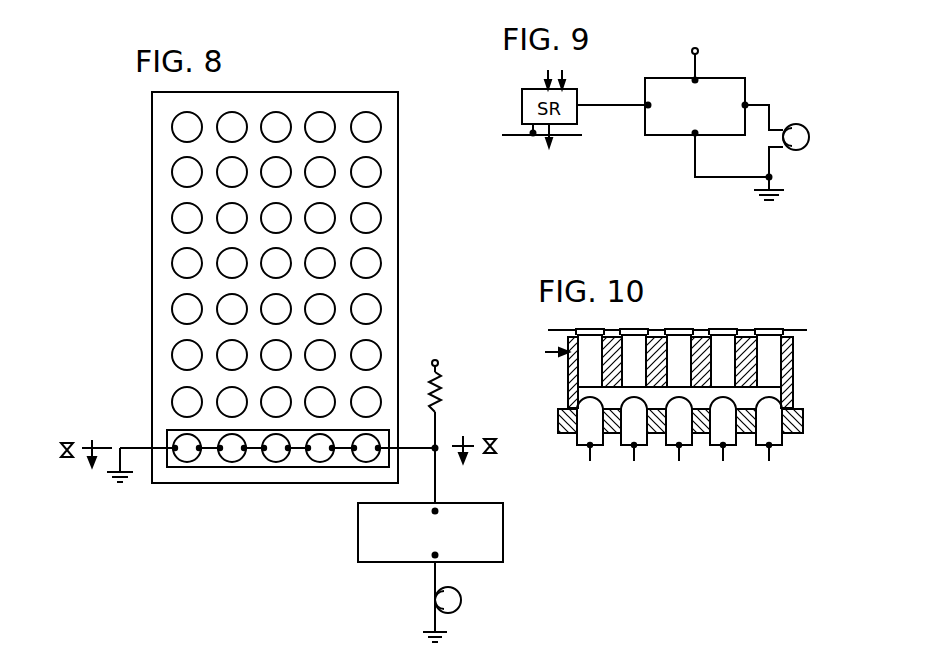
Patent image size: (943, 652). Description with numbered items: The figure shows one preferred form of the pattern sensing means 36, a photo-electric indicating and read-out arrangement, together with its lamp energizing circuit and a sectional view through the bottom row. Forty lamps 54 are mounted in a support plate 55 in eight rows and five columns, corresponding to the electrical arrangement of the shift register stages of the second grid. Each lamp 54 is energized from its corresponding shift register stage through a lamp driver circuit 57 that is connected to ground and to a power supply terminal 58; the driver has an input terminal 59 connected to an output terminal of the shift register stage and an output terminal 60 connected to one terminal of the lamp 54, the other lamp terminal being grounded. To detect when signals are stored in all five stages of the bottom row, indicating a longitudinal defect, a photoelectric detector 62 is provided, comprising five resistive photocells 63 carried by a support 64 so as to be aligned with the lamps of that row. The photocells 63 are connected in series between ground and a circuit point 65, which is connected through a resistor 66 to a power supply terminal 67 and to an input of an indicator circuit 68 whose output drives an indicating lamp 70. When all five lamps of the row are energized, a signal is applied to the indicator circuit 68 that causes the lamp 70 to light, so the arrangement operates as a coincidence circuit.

In FIG. 8, the pattern sensing means 36 is at (98, 118).
In FIG. 8, the lamp 54 is at (378, 132).
In FIG. 9, the lamp 54 is at (810, 136).
In FIG. 10, the lamp 54 is at (720, 449).
In FIG. 8, the support plate 55 is at (398, 206).
In FIG. 10, the support plate 55 is at (803, 424).
In FIG. 9, the lamp driver circuit 57 is at (748, 86).
In FIG. 9, the power supply terminal 58 is at (699, 52).
In FIG. 9, the input terminal 59 is at (643, 107).
In FIG. 9, the output terminal 60 is at (752, 101).
In FIG. 8, the photoelectric detector 62 is at (318, 468).
In FIG. 10, the photoelectric detector 62 is at (538, 352).
In FIG. 8, the resistive photocell 63 is at (273, 463).
In FIG. 10, the resistive photocell 63 is at (681, 338).
In FIG. 8, the support 64 is at (208, 462).
In FIG. 10, the support 64 is at (793, 351).
In FIG. 8, the circuit point 65 is at (437, 444).
In FIG. 8, the resistor 66 is at (441, 392).
In FIG. 8, the power supply terminal 67 is at (438, 365).
In FIG. 8, the indicator circuit 68 is at (503, 532).
In FIG. 8, the indicating lamp 70 is at (462, 601).